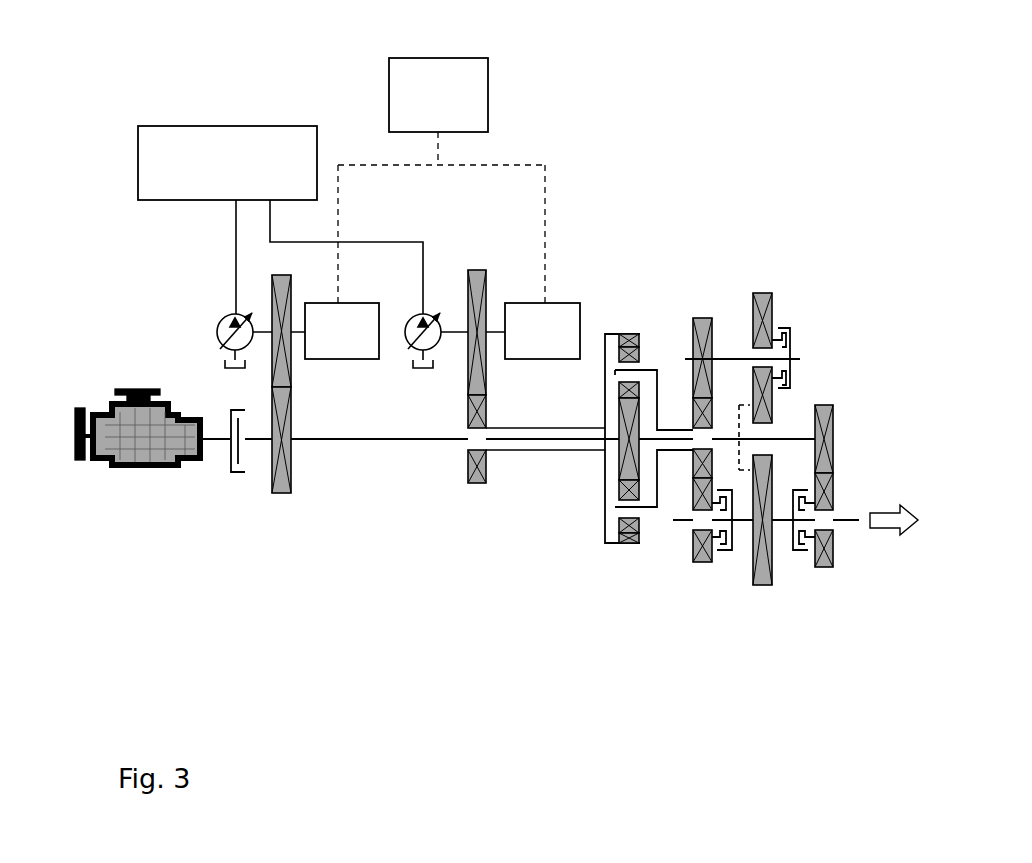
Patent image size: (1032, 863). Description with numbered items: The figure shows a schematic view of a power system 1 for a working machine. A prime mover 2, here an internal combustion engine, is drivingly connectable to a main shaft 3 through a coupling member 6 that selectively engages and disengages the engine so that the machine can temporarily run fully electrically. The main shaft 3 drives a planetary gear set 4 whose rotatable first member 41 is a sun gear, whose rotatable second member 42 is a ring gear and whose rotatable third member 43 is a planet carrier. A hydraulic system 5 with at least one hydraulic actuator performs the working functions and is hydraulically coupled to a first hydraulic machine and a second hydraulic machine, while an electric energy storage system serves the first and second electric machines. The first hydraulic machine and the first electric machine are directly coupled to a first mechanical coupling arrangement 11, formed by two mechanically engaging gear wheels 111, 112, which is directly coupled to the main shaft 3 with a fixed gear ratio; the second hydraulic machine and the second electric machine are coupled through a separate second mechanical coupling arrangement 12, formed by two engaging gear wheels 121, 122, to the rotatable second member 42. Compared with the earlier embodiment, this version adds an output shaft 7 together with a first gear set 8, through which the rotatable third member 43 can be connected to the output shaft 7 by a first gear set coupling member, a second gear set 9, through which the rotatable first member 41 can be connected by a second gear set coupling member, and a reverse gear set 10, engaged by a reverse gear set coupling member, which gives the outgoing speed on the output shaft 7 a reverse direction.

The power system 1 is at (175, 80).
The prime mover 2 is at (118, 477).
The main shaft 3 is at (373, 440).
The planetary gear set 4 is at (650, 301).
The hydraulic system 5 is at (275, 126).
The coupling member 6 is at (242, 482).
The output shaft 7 is at (848, 522).
The first gear set 8 is at (681, 549).
The second gear set 9 is at (852, 456).
The reverse gear set 10 is at (780, 271).
The first mechanical coupling arrangement 11 is at (299, 398).
The second mechanical coupling arrangement 12 is at (453, 416).
The rotatable first member 41 is at (620, 463).
The rotatable second member 42 is at (630, 334).
The rotatable third member 43 is at (643, 507).
The gear wheel 111 is at (282, 493).
The gear wheel 112 is at (275, 273).
The gear wheel 121 is at (473, 483).
The gear wheel 122 is at (481, 270).